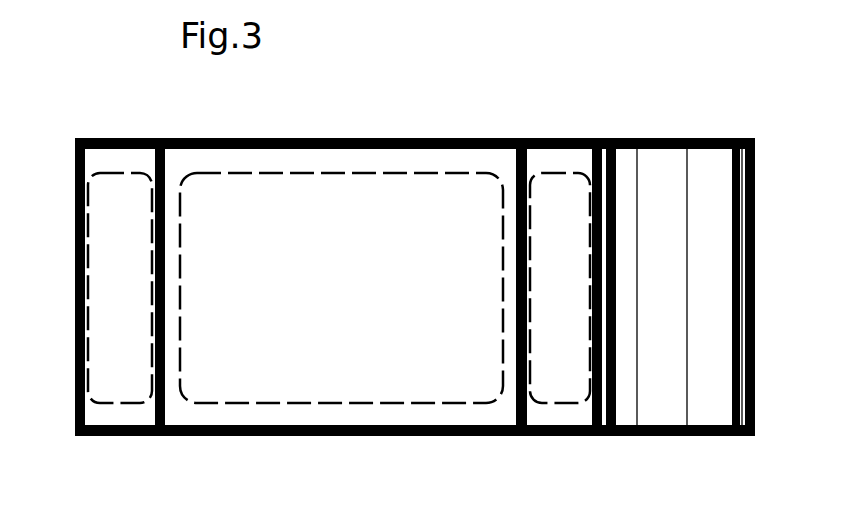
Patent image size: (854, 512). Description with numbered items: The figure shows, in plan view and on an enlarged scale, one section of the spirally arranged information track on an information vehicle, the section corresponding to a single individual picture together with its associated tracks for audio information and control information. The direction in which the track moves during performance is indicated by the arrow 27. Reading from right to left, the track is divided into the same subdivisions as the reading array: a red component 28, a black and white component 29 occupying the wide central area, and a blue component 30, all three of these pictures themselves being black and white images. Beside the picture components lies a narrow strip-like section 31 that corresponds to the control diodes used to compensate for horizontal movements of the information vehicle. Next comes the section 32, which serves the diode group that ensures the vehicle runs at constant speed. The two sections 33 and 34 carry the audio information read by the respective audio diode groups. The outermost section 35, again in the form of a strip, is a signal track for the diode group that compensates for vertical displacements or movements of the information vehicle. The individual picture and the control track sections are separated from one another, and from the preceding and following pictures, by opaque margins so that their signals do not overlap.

The arrow 27 is at (33, 212).
The red component 28 is at (127, 415).
The black and white component 29 is at (330, 413).
The blue component 30 is at (558, 415).
The narrow strip-like section 31 is at (603, 147).
The section for constant speed 32 is at (628, 417).
The audio information section 33 is at (668, 417).
The audio information section 34 is at (710, 415).
The signal track section 35 is at (741, 157).